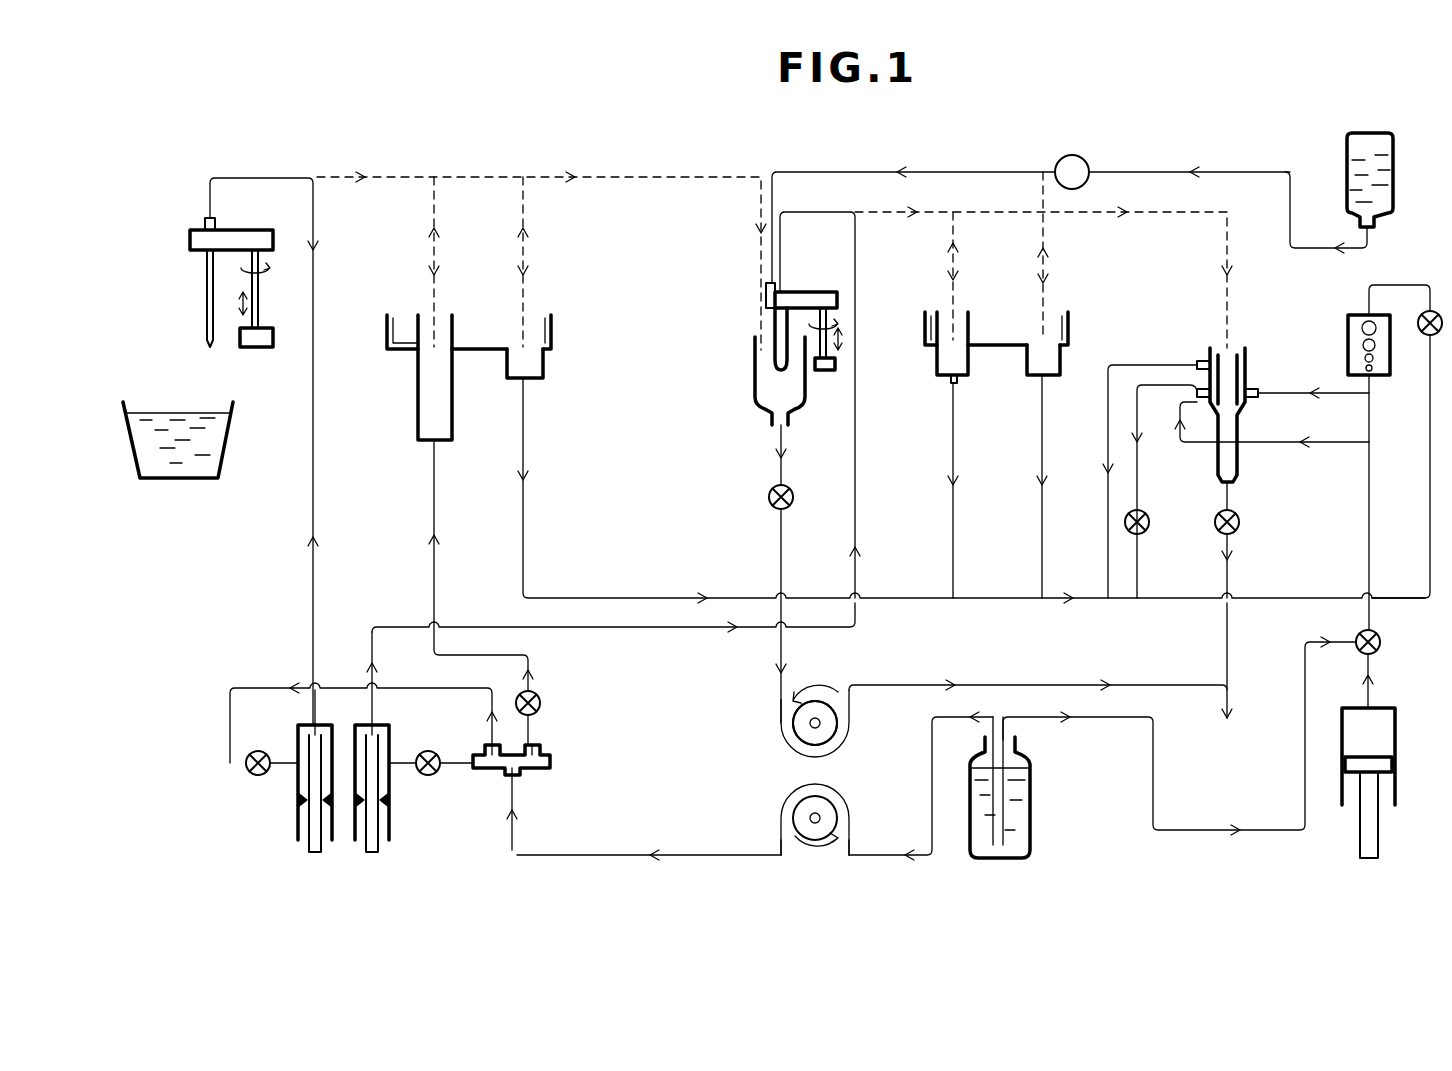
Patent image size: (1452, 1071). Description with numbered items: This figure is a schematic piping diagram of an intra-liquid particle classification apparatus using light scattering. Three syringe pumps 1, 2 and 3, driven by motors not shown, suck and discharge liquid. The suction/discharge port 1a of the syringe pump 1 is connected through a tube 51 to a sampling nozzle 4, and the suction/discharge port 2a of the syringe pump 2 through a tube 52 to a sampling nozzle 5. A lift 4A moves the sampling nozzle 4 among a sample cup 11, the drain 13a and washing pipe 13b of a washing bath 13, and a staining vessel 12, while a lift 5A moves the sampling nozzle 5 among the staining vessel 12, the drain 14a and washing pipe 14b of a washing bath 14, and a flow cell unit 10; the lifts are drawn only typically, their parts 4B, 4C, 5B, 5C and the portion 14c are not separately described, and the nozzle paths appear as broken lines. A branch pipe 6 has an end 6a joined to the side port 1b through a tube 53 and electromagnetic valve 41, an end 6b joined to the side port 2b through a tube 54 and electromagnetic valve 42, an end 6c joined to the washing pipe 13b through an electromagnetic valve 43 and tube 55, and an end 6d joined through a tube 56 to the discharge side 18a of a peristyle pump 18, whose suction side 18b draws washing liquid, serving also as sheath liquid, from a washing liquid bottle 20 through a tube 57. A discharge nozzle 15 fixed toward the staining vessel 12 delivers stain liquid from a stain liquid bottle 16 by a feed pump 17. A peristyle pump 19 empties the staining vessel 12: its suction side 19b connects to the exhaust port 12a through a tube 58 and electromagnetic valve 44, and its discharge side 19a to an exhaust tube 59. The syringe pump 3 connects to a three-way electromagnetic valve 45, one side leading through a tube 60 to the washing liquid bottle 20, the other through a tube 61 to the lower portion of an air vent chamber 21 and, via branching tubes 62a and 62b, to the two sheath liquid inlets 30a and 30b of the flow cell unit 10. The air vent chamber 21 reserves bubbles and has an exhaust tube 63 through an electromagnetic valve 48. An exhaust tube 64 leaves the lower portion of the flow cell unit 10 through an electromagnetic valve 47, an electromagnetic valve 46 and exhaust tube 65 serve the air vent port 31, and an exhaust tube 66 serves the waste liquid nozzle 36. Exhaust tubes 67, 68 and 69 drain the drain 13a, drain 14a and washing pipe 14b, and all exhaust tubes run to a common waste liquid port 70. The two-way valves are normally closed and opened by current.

The syringe pump 1 is at (308, 855).
The suction/discharge port 1a is at (312, 723).
The side port 1b is at (297, 768).
The syringe pump 2 is at (378, 855).
The suction/discharge port 2a is at (375, 722).
The side port 2b is at (390, 768).
The syringe pump 3 is at (1360, 845).
The sampling nozzle 4 is at (205, 285).
The lift 4A is at (190, 209).
The sampling arm 4B is at (245, 232).
The arm drive 4C is at (262, 300).
The sampling nozzle 5 is at (775, 328).
The lift 5A is at (820, 279).
The dispensing arm 5B is at (835, 297).
The arm drive 5C is at (840, 340).
The branch pipe 6 is at (551, 764).
The end of branch pipe 6a is at (488, 745).
The end of branch pipe 6b is at (495, 790).
The end of branch pipe 6c is at (540, 748).
The end of branch pipe 6d is at (518, 778).
The flow cell unit 10 is at (1238, 470).
The sample cup 11 is at (178, 480).
The staining vessel 12 is at (755, 387).
The exhaust port 12a is at (790, 420).
The washing bath 13 is at (552, 318).
The drain 13a is at (545, 370).
The washing pipe 13b is at (418, 425).
The washing bath 14 is at (1070, 318).
The drain 14a is at (1035, 377).
The washing pipe 14b is at (935, 368).
The drain outlet 14c is at (958, 385).
The discharge nozzle 15 is at (766, 292).
The stain liquid bottle 16 is at (1393, 165).
The feed pump 17 is at (1082, 156).
The peristyle pump 18 is at (793, 818).
The discharge side 18a is at (782, 858).
The suction side 18b is at (850, 858).
The peristyle pump 19 is at (798, 745).
The discharge side 19a is at (850, 725).
The suction side 19b is at (781, 710).
The washing liquid bottle 20 is at (1032, 840).
The air vent chamber 21 is at (1390, 358).
The sheath liquid inlet 30a is at (1255, 393).
The sheath liquid inlet 30b is at (1190, 405).
The air vent port 31 is at (1197, 365).
The waste liquid nozzle 36 is at (1215, 352).
The electromagnetic valve 41 is at (252, 775).
The electromagnetic valve 42 is at (435, 778).
The electromagnetic valve 43 is at (541, 704).
The electromagnetic valve 44 is at (768, 497).
The three-way electromagnetic valve 45 is at (1381, 645).
The electromagnetic valve 46 is at (1146, 533).
The electromagnetic valve 47 is at (1240, 524).
The electromagnetic valve 48 is at (1432, 310).
The tube 51 is at (313, 588).
The tube 52 is at (657, 632).
The tube 53 is at (264, 688).
The tube 54 is at (460, 766).
The tube 55 is at (532, 660).
The tube 56 is at (595, 855).
The tube 57 is at (890, 852).
The tube 58 is at (780, 558).
The exhaust tube 59 is at (980, 684).
The tube 60 is at (1212, 830).
The tube 61 is at (1392, 472).
The tube 62a is at (1280, 395).
The tube 62b is at (1282, 444).
The exhaust tube 63 is at (1426, 530).
The exhaust tube 64 is at (1229, 573).
The exhaust tube 65 is at (1140, 500).
The exhaust tube 66 is at (1106, 412).
The exhaust tube 67 is at (525, 513).
The exhaust tube 68 is at (955, 553).
The exhaust tube 69 is at (1044, 553).
The waste liquid port 70 is at (1222, 702).